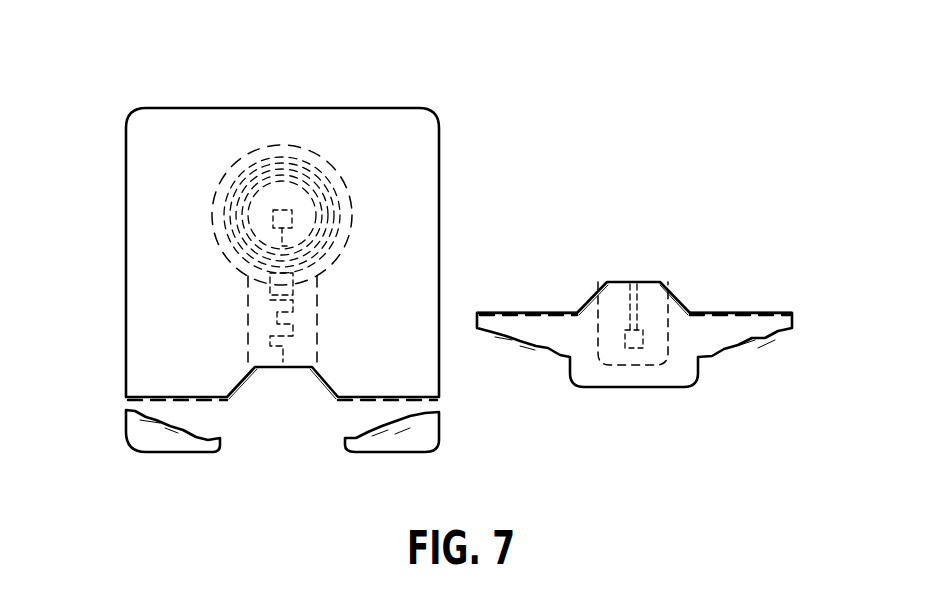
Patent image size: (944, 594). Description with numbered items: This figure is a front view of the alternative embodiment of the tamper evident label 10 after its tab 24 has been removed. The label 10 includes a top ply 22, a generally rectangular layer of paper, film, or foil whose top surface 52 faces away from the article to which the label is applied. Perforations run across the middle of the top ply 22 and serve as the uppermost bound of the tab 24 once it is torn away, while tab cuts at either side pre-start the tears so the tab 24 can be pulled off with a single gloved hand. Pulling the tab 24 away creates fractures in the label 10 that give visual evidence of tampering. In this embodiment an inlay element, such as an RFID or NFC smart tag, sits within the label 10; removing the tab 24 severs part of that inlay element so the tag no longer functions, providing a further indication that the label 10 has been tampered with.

The tamper evident label 10 is at (124, 107).
The top ply 22 is at (127, 187).
The tab 24 is at (637, 388).
The top surface 52 is at (195, 182).